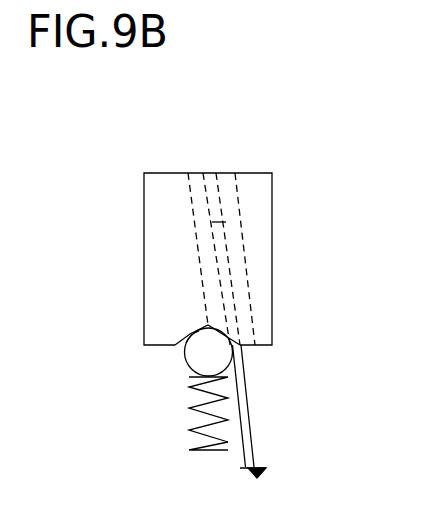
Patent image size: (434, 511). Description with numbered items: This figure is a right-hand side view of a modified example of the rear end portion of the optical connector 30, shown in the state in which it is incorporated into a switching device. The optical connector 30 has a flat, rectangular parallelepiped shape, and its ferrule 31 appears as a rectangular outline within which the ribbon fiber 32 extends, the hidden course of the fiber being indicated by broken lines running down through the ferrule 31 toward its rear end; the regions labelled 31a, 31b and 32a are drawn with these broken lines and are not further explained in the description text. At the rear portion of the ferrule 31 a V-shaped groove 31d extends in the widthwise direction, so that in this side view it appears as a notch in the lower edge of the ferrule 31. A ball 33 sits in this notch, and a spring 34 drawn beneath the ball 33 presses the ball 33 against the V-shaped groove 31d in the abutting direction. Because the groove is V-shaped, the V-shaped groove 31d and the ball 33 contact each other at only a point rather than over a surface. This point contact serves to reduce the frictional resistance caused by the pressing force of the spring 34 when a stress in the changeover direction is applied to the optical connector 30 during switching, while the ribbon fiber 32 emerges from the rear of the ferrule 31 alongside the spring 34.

The optical connector 30 is at (240, 72).
The ferrule 31 is at (172, 164).
The bore 31a is at (247, 173).
The passage 31b is at (199, 226).
The V-shaped groove 31d is at (183, 348).
The ribbon fiber 32 is at (263, 437).
The rod upper portion 32a is at (222, 221).
The ball 33 is at (237, 352).
The spring 34 is at (198, 420).